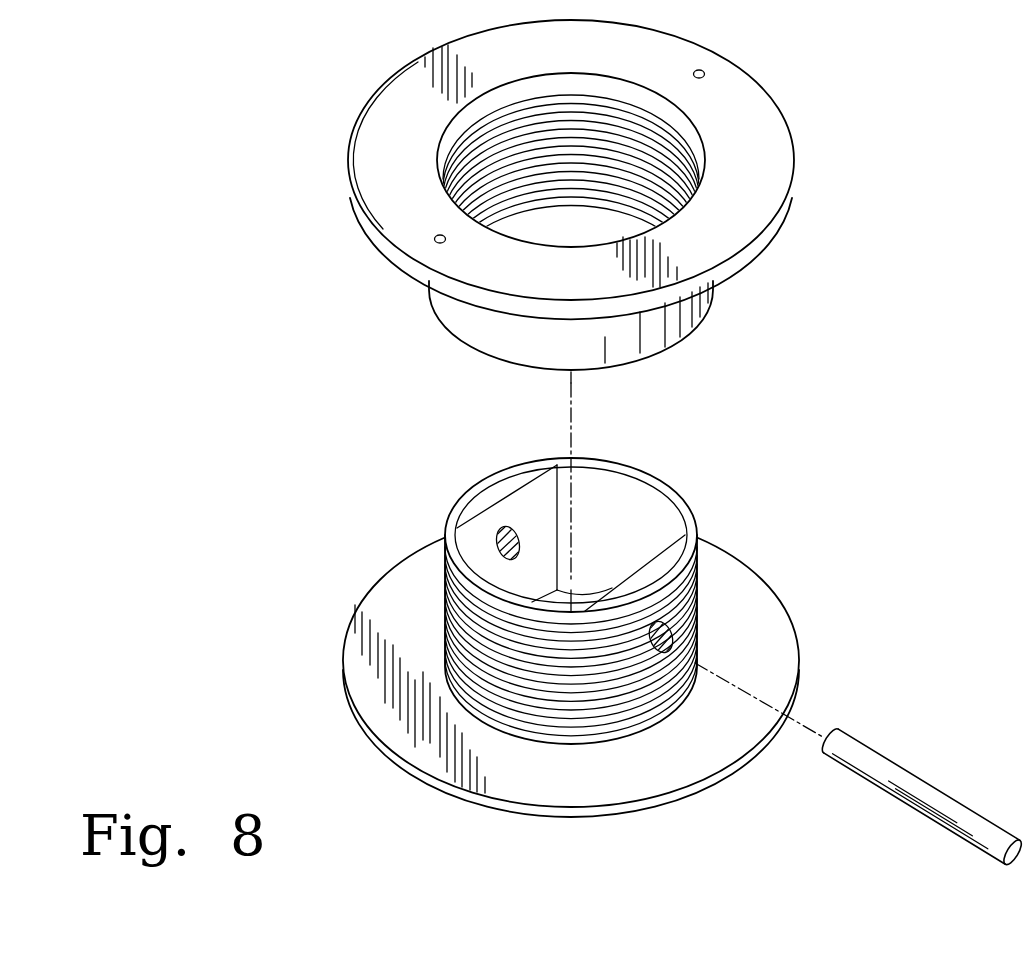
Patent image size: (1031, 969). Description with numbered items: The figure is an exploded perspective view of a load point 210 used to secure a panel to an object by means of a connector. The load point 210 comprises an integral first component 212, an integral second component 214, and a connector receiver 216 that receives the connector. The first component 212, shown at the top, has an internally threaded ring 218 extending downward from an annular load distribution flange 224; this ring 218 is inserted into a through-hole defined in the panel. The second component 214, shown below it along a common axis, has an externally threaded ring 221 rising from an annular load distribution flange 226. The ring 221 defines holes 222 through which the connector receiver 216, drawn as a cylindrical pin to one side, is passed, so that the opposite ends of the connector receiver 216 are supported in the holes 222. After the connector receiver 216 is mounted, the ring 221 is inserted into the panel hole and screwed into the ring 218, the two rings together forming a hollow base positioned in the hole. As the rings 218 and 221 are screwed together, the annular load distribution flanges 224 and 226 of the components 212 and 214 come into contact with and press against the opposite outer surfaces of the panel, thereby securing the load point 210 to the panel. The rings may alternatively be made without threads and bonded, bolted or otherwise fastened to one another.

The load point 210 is at (684, 448).
The first component 212 is at (622, 201).
The second component 214 is at (614, 667).
The connector receiver 216 is at (888, 773).
The internally threaded ring 218 is at (674, 327).
The externally threaded ring 221 is at (698, 608).
The holes 222 is at (505, 560).
The annular load distribution flange 224 is at (755, 162).
The annular load distribution flange 226 is at (607, 778).